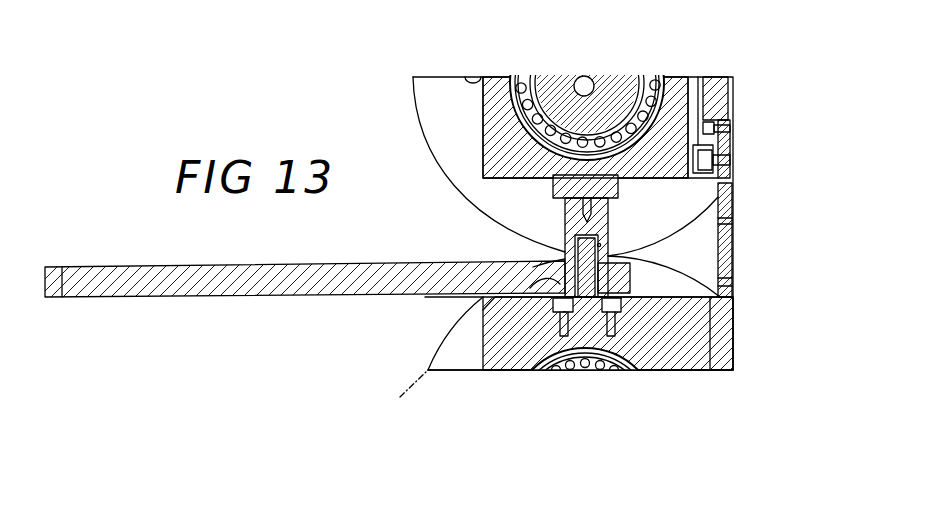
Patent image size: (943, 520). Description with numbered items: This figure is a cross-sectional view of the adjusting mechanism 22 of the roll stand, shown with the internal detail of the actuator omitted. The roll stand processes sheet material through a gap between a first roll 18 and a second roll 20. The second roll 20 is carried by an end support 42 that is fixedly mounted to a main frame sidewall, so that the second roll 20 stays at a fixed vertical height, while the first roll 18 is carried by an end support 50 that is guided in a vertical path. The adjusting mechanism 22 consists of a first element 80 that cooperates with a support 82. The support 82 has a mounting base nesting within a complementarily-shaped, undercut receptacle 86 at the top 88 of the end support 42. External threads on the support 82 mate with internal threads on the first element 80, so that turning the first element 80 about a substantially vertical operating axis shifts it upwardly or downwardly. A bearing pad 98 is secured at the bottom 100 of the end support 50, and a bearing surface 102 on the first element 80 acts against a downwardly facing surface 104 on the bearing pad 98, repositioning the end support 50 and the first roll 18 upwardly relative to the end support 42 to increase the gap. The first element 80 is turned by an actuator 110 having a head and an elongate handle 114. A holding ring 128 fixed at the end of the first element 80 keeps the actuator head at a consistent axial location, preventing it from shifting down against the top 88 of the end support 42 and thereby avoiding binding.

The first roll 18 is at (443, 93).
The bearing pad 98 is at (497, 142).
The bearing surface 102 is at (690, 78).
The first element 80 is at (680, 160).
The end support 50 is at (503, 149).
The bottom 100 is at (512, 186).
The downwardly facing surface 104 is at (563, 204).
The support 82 is at (583, 268).
The top 88 is at (640, 292).
The second roll 20 is at (458, 330).
The actuator 110 is at (156, 284).
The elongate handle 114 is at (250, 284).
The adjusting mechanism 22 is at (385, 345).
The holding ring 128 is at (620, 312).
The undercut receptacle 86 is at (400, 397).
The end support 42 is at (520, 356).